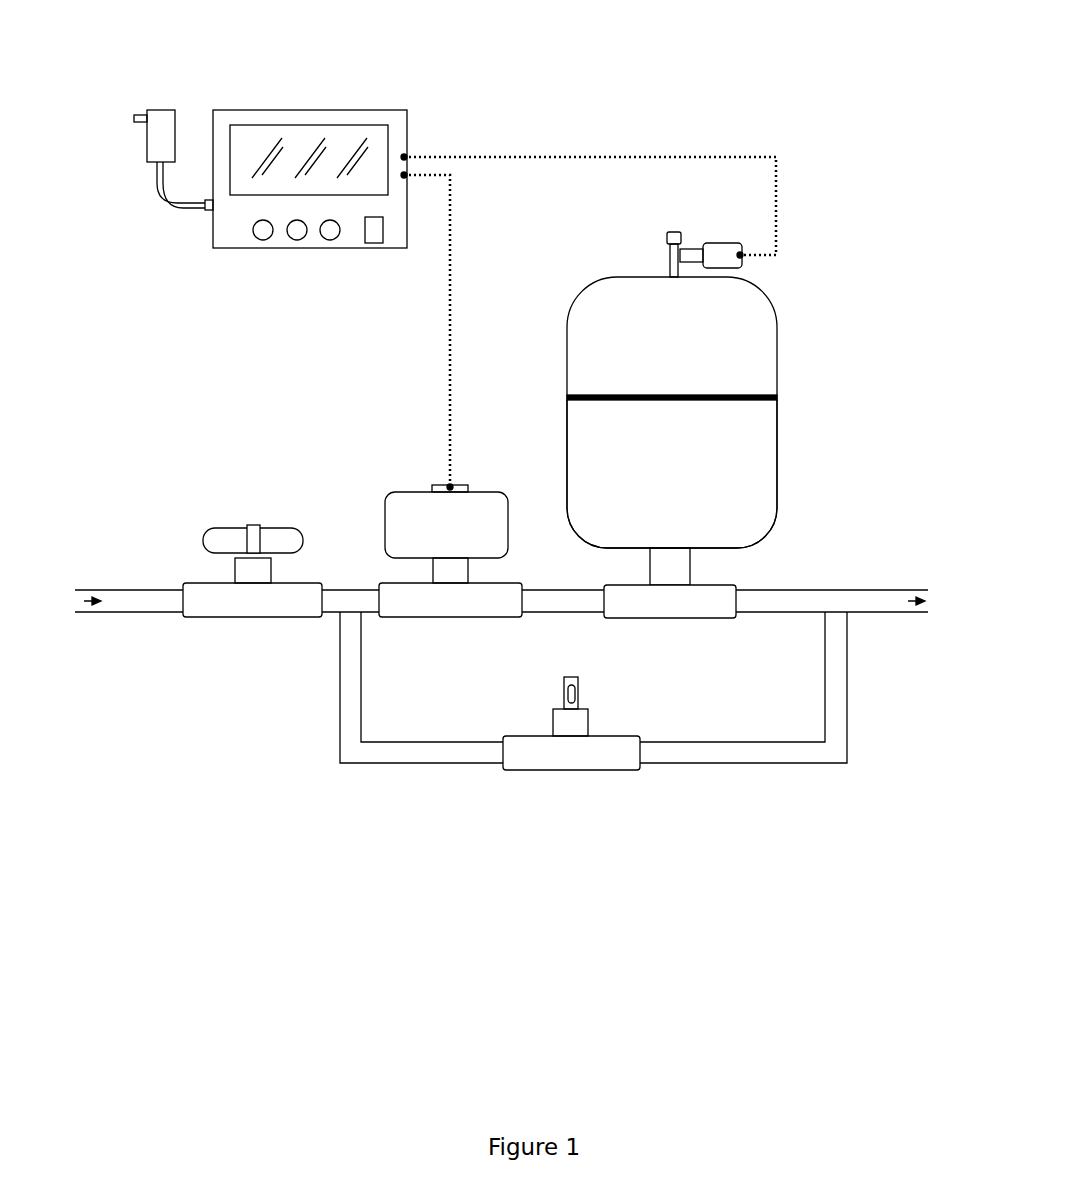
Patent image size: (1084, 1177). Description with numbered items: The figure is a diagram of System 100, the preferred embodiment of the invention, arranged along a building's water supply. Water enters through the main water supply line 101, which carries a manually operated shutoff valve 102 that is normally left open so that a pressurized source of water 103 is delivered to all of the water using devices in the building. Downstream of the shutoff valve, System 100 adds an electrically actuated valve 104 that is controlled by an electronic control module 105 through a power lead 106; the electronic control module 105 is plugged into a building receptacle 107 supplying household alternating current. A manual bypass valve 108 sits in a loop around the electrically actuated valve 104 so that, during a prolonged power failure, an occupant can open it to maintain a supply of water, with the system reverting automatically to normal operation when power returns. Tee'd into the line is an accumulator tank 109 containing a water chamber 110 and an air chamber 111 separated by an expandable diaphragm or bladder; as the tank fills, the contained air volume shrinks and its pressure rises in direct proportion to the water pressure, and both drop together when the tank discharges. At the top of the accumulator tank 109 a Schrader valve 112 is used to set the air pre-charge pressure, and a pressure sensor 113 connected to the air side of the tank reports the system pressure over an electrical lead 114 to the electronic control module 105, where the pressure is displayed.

The System 100 is at (397, 845).
The main water supply line 101 is at (110, 597).
The manually operated shutoff valve 102 is at (255, 543).
The pressurized source of water 103 is at (897, 597).
The electrically actuated valve 104 is at (403, 522).
The electronic control module 105 is at (393, 118).
The power lead 106 is at (448, 312).
The building receptacle 107 is at (166, 112).
The manual bypass valve 108 is at (578, 750).
The accumulator tank 109 is at (778, 398).
The water chamber 110 is at (760, 463).
The air chamber 111 is at (740, 350).
The Schrader valve 112 is at (668, 240).
The pressure sensor 113 is at (743, 257).
The electrical lead 114 is at (553, 157).